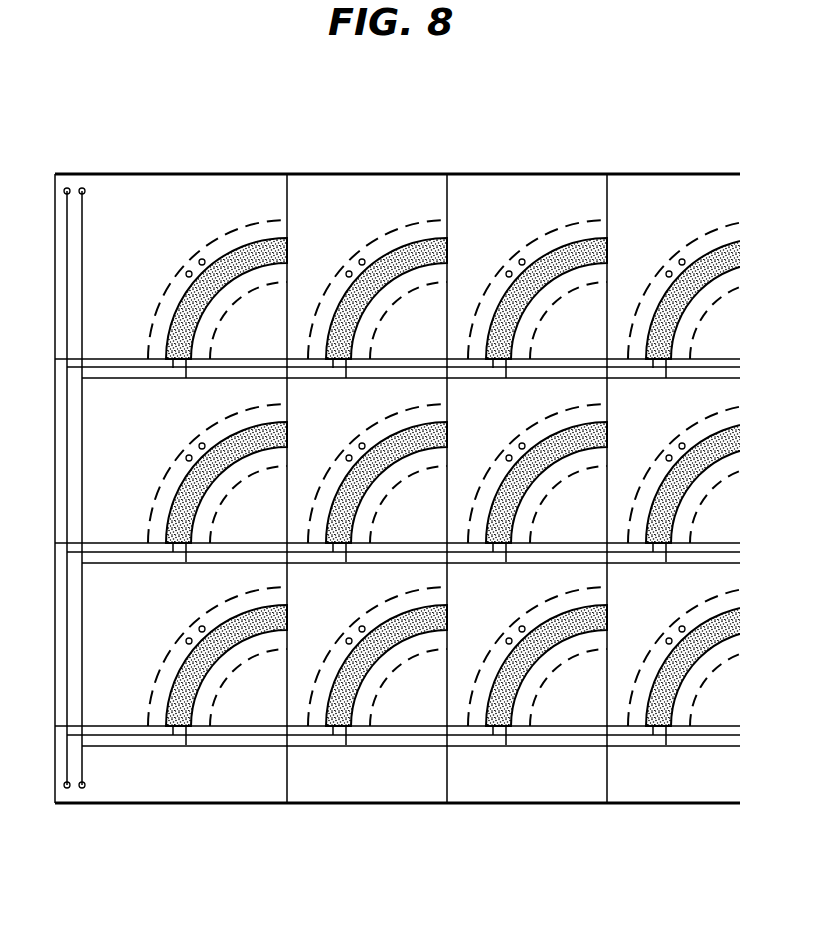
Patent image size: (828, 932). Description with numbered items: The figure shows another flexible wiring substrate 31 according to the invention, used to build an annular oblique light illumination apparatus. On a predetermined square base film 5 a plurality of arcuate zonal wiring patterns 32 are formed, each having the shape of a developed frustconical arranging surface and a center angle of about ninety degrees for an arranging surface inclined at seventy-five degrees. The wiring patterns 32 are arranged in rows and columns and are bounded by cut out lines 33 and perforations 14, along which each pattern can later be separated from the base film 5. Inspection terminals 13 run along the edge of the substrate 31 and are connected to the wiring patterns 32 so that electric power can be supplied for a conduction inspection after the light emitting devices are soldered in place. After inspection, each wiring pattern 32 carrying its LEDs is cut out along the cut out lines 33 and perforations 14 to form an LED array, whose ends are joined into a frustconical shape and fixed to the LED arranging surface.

The square base film 5 is at (485, 202).
The inspection terminals 13 is at (82, 188).
The perforations 14 is at (162, 302).
The flexible wiring substrate 31 is at (343, 172).
The arcuate zonal wiring pattern 32 is at (240, 257).
The cut out lines 33 is at (130, 359).